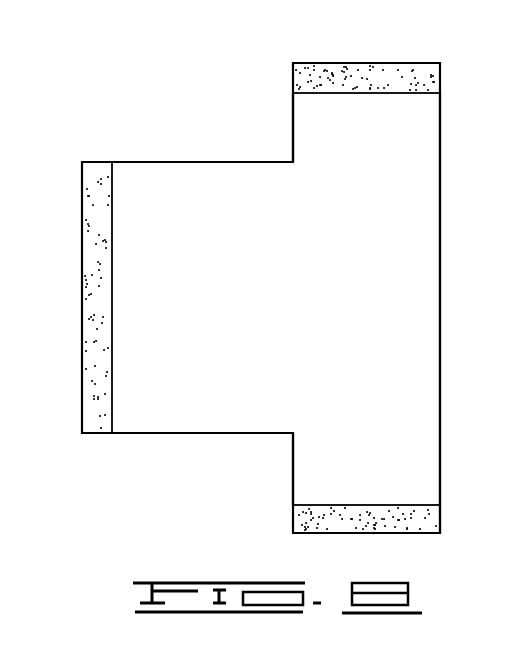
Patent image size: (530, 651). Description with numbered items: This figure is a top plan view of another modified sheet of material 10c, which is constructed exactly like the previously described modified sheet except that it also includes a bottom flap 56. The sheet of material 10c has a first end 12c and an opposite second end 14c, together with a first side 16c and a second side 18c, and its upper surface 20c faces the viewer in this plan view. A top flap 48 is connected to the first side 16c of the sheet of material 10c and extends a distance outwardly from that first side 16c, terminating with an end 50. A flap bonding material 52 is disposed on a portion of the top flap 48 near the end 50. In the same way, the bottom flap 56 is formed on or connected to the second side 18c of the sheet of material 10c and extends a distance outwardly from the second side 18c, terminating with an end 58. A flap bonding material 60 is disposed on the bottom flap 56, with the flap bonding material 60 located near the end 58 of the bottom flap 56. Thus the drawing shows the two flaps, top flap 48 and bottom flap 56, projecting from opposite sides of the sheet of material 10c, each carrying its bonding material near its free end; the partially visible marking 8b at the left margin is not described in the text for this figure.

The sheet of material 10c is at (160, 162).
The first end 12c is at (83, 296).
The second end 14c is at (440, 223).
The first side 16c is at (258, 162).
The second side 18c is at (190, 436).
The upper surface 20c is at (392, 316).
The top flap 48 is at (309, 117).
The end 50 is at (338, 63).
The flap bonding material 52 is at (405, 78).
The bottom flap 56 is at (310, 483).
The end 58 is at (367, 533).
The flap bonding material 60 is at (418, 518).
The reference (partial) 8b is at (8, 243).